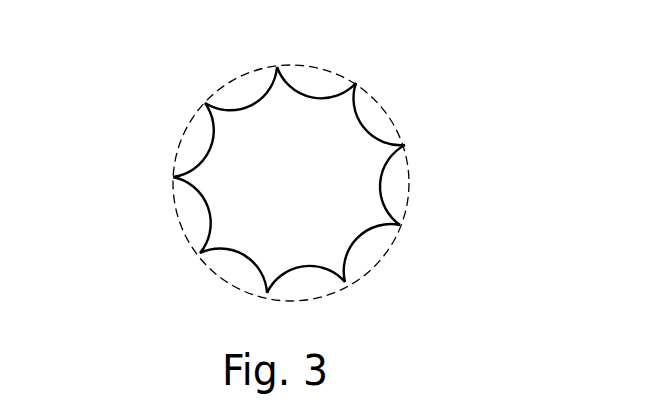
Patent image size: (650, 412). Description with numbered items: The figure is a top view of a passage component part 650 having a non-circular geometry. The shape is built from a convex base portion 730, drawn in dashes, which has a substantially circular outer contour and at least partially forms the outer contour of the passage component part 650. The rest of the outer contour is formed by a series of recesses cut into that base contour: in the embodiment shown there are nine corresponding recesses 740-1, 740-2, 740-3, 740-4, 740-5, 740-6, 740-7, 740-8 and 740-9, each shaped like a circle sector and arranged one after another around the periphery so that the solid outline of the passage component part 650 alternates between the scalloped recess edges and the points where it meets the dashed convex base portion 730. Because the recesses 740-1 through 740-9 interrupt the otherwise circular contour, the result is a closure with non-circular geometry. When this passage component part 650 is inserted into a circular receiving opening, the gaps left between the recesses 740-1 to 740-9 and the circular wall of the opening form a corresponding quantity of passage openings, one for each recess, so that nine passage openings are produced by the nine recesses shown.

The convex base portion 730 is at (407, 212).
The passage component part 650 is at (337, 162).
The recess 740-1 is at (322, 77).
The recess 740-2 is at (383, 115).
The recess 740-3 is at (393, 182).
The recess 740-4 is at (365, 257).
The recess 740-5 is at (313, 285).
The recess 740-6 is at (235, 273).
The recess 740-7 is at (195, 217).
The recess 740-8 is at (198, 137).
The recess 740-9 is at (252, 85).